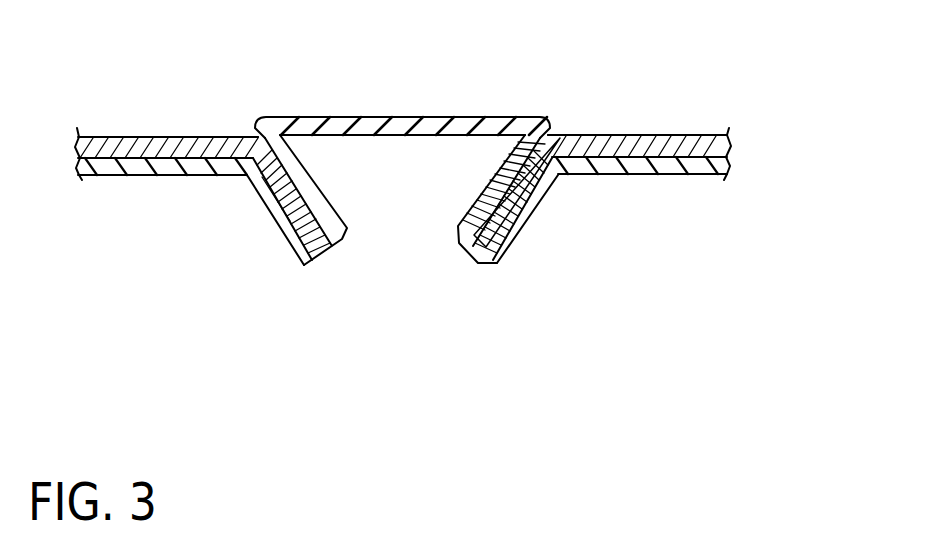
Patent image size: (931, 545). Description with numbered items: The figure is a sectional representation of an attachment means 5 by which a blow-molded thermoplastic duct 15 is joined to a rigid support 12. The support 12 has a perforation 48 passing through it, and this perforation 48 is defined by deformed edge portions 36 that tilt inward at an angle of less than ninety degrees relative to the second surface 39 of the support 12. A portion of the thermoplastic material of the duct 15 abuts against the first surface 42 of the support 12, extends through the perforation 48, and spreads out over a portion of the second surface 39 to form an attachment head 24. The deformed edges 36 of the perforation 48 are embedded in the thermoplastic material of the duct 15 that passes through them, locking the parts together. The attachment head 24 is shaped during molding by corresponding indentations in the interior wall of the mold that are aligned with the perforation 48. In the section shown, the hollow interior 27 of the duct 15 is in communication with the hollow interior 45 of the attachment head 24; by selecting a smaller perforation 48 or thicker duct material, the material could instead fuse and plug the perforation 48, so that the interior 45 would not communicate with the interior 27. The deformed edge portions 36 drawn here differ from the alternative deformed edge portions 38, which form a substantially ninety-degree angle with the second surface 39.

The attachment means 5 is at (393, 244).
The rigid support 12 is at (126, 137).
The duct 15 is at (107, 177).
The attachment head 24 is at (372, 118).
The hollow interior of duct 27 is at (615, 390).
The deformed edge portions 36 is at (288, 233).
The deformed edge portions 38 is at (203, 137).
The second surface 39 is at (712, 136).
The first surface 42 is at (172, 162).
The hollow interior of attachment head 45 is at (420, 196).
The perforation 48 is at (402, 230).